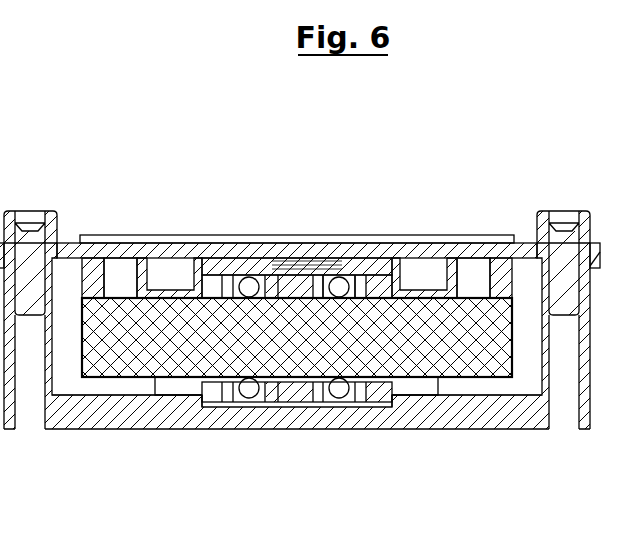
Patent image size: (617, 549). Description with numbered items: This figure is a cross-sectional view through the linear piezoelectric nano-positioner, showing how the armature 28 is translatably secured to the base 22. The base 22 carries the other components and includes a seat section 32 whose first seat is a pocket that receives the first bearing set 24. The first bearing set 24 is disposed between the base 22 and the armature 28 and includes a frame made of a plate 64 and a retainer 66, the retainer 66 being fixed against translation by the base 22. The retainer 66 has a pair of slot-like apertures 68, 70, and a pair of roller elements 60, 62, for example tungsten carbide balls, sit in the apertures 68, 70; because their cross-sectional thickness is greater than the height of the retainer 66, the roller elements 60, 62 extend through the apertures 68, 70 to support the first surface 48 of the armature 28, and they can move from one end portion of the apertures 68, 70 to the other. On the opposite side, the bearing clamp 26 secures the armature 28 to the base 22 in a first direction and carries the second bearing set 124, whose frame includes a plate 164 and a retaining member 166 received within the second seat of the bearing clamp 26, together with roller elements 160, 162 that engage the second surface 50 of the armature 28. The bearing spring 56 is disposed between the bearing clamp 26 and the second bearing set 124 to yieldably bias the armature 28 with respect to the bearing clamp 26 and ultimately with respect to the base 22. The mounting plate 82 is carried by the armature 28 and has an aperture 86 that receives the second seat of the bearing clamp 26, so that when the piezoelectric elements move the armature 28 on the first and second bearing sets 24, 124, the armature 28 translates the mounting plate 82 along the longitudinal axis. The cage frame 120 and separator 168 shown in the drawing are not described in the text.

The base 22 is at (82, 431).
The first bearing set 24 is at (197, 409).
The bearing clamp 26 is at (525, 242).
The armature 28 is at (517, 380).
The seat section 32 is at (53, 431).
The first surface 48 is at (478, 379).
The second surface 50 is at (480, 300).
The bearing spring 56 is at (278, 252).
The roller element 60 is at (330, 408).
The roller element 62 is at (260, 408).
The plate 64 is at (358, 408).
The retainer 66 is at (392, 397).
The aperture 68 is at (353, 392).
The aperture 70 is at (238, 403).
The mounting plate 82 is at (108, 233).
The aperture 86 is at (146, 268).
The upper bearing cage 120 is at (235, 278).
The second bearing set 124 is at (203, 262).
The roller element 160 is at (350, 268).
The roller element 162 is at (250, 265).
The plate 164 is at (330, 253).
The retaining member 166 is at (382, 278).
The cage separator 168 is at (362, 265).